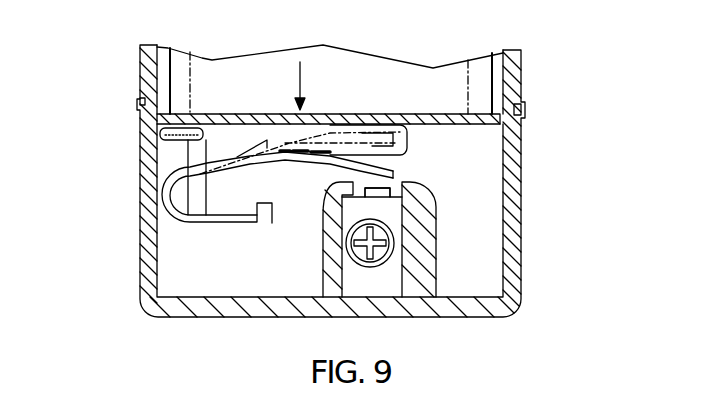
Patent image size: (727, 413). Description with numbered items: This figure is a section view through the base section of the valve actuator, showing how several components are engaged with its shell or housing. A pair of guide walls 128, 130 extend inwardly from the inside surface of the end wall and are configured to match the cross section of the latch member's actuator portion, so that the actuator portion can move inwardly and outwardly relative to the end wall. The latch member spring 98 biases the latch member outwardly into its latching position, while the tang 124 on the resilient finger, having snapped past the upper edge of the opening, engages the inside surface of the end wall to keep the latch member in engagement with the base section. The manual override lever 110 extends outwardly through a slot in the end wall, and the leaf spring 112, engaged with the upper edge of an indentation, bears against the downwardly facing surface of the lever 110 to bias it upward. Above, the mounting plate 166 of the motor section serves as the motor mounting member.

The latch member spring 98 is at (391, 222).
The manual override lever 110 is at (321, 137).
The leaf spring 112 is at (181, 169).
The tang 124 is at (384, 186).
The guide wall 128 is at (342, 222).
The guide wall 130 is at (437, 246).
The mounting plate 166 is at (440, 118).